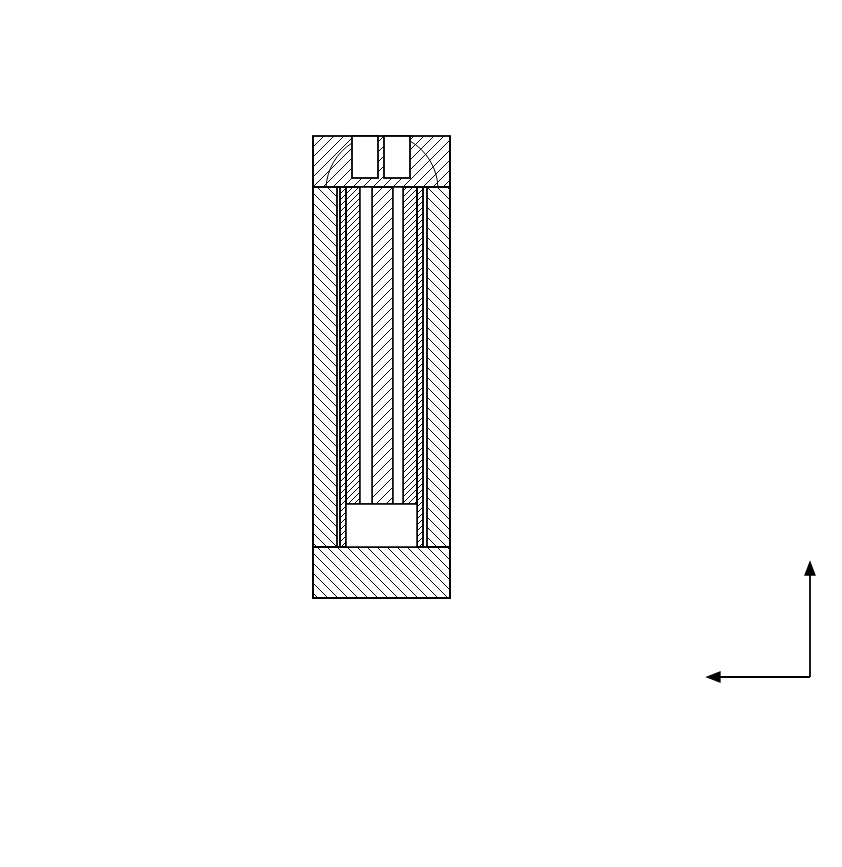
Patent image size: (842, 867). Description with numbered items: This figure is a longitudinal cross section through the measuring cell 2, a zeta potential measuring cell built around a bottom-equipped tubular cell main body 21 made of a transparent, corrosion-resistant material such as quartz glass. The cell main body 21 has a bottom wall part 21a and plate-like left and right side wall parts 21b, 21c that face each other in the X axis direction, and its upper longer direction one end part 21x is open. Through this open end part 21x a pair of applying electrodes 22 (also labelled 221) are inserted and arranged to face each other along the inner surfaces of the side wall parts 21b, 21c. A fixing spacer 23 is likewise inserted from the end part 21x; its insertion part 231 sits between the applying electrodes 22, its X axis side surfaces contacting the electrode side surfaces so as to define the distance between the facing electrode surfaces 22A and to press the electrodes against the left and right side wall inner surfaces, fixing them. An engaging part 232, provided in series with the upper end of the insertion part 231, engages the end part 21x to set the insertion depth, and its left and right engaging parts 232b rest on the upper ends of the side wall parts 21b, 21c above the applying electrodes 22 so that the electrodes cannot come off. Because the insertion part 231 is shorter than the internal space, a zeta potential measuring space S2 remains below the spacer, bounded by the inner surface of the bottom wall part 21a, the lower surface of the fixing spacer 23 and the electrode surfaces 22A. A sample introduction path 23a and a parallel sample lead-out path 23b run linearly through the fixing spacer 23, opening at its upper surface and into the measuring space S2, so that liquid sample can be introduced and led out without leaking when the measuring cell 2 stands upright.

The measuring cell 2 is at (208, 70).
The cell main body 21 is at (450, 386).
The bottom wall part 21a is at (420, 598).
The left side wall part 21b is at (313, 279).
The right side wall part 21c is at (450, 272).
The longer direction one end part 21x is at (470, 190).
The applying electrodes 22 is at (338, 453).
The electrode body 221 is at (381, 367).
The electrode surfaces 22A is at (349, 515).
The fixing spacer 23 is at (215, 168).
The insertion part 231 is at (343, 265).
The engaging part 232 is at (313, 166).
The left and right engaging parts 232b is at (408, 136).
The sample introduction path 23a is at (367, 330).
The sample lead-out path 23b is at (396, 330).
The zeta potential measuring space S2 is at (396, 530).